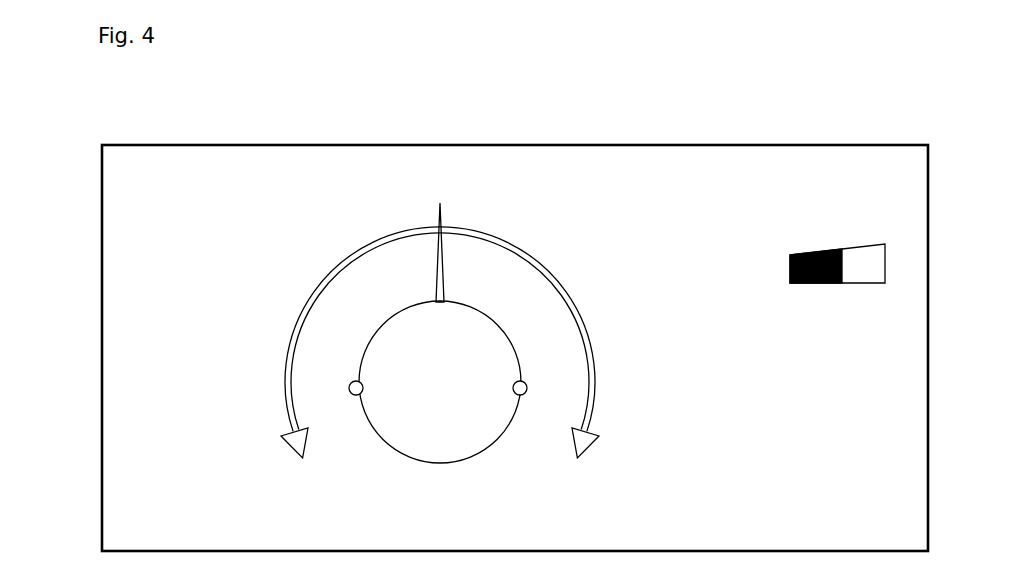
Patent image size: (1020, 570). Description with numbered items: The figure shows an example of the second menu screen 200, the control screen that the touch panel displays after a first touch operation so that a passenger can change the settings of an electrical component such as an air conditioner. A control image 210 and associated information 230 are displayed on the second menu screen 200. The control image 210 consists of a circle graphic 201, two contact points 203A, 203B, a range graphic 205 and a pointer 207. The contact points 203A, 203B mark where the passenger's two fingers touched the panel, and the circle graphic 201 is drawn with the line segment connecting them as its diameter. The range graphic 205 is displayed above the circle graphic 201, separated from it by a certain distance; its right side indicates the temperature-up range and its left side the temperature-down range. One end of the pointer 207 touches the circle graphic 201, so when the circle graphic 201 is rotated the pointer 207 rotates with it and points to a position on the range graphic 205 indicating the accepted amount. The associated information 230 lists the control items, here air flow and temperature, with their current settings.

The second menu screen 200 is at (623, 146).
The control image 210 is at (420, 319).
The circle graphic 201 is at (445, 466).
The contact point 203A is at (355, 396).
The contact point 203B is at (523, 395).
The range graphic 205 is at (598, 370).
The pointer 207 is at (442, 218).
The associated information 230 is at (800, 224).